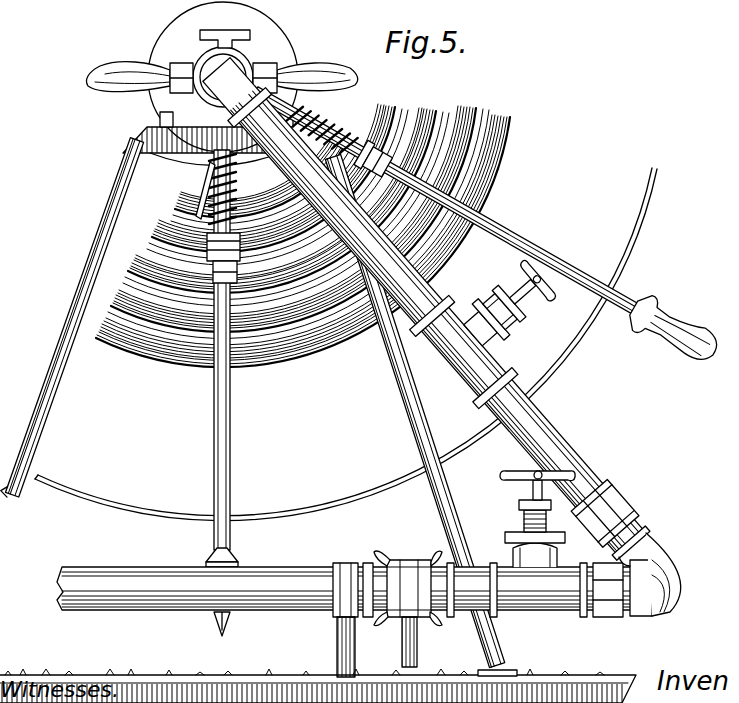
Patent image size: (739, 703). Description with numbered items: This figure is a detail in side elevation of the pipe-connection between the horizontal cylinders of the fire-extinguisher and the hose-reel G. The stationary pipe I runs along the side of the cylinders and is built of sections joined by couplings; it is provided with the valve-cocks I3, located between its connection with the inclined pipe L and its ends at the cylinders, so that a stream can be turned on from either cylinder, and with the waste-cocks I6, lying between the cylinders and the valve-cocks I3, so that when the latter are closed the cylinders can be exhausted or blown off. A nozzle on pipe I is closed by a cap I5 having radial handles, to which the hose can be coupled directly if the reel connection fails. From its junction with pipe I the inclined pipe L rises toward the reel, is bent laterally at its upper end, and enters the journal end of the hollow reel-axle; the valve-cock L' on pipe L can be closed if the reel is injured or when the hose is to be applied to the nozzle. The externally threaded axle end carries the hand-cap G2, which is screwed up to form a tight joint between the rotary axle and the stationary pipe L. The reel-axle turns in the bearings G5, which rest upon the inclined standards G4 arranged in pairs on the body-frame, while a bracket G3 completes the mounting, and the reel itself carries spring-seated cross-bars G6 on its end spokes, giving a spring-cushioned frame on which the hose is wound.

The hose-reel G is at (346, 344).
The hand-cap G2 is at (323, 78).
The bracket G3 is at (146, 128).
The inclined standards G4 is at (391, 404).
The bearings for the reel-axle G5 is at (316, 235).
The spring-seated cross-bars G6 is at (211, 240).
The inclined pipe L is at (425, 307).
The valve-cock L' is at (507, 306).
The stationary pipe I is at (369, 605).
The cocks I3 is at (527, 481).
The cap I5 is at (512, 700).
The waste-cocks I6 is at (393, 562).